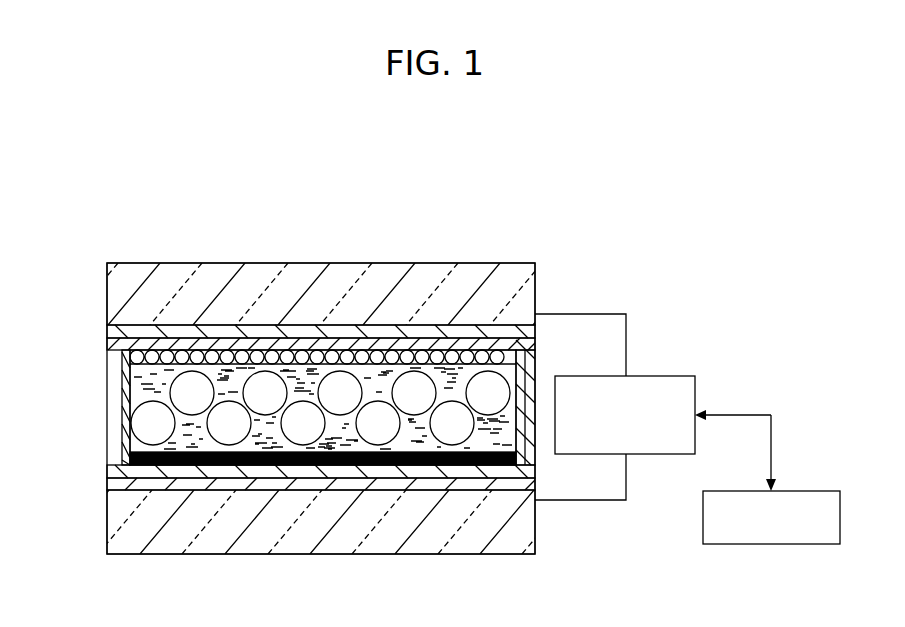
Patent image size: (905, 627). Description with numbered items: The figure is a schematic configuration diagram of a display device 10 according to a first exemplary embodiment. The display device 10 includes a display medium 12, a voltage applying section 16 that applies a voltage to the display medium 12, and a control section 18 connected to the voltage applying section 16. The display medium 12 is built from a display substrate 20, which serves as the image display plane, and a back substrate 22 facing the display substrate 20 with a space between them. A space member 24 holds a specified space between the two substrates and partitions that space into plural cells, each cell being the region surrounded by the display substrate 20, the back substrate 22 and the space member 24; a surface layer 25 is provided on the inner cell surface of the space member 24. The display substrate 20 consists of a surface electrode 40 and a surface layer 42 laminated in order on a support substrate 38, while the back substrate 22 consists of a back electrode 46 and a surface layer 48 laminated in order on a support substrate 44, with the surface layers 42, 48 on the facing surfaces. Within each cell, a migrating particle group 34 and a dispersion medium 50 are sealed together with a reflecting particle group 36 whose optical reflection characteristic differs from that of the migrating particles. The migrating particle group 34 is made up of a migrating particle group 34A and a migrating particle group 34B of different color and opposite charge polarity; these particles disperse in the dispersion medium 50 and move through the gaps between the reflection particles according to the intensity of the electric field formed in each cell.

The display device 10 is at (436, 184).
The display medium 12 is at (497, 251).
The voltage applying section 16 is at (665, 376).
The control section 18 is at (805, 491).
The display substrate 20 is at (57, 285).
The back substrate 22 is at (57, 458).
The space member 24 is at (126, 397).
The surface layer 25 is at (134, 434).
The migrating particle group 34 is at (323, 402).
The migrating particle group 34A is at (200, 460).
The migrating particle group 34B is at (201, 360).
The reflecting particle group 36 is at (272, 385).
The support substrate 38 is at (118, 292).
The surface electrode 40 is at (110, 331).
The surface layer 42 is at (112, 343).
The support substrate 44 is at (118, 530).
The back electrode 46 is at (125, 484).
The surface layer 48 is at (120, 466).
The dispersion medium 50 is at (372, 385).